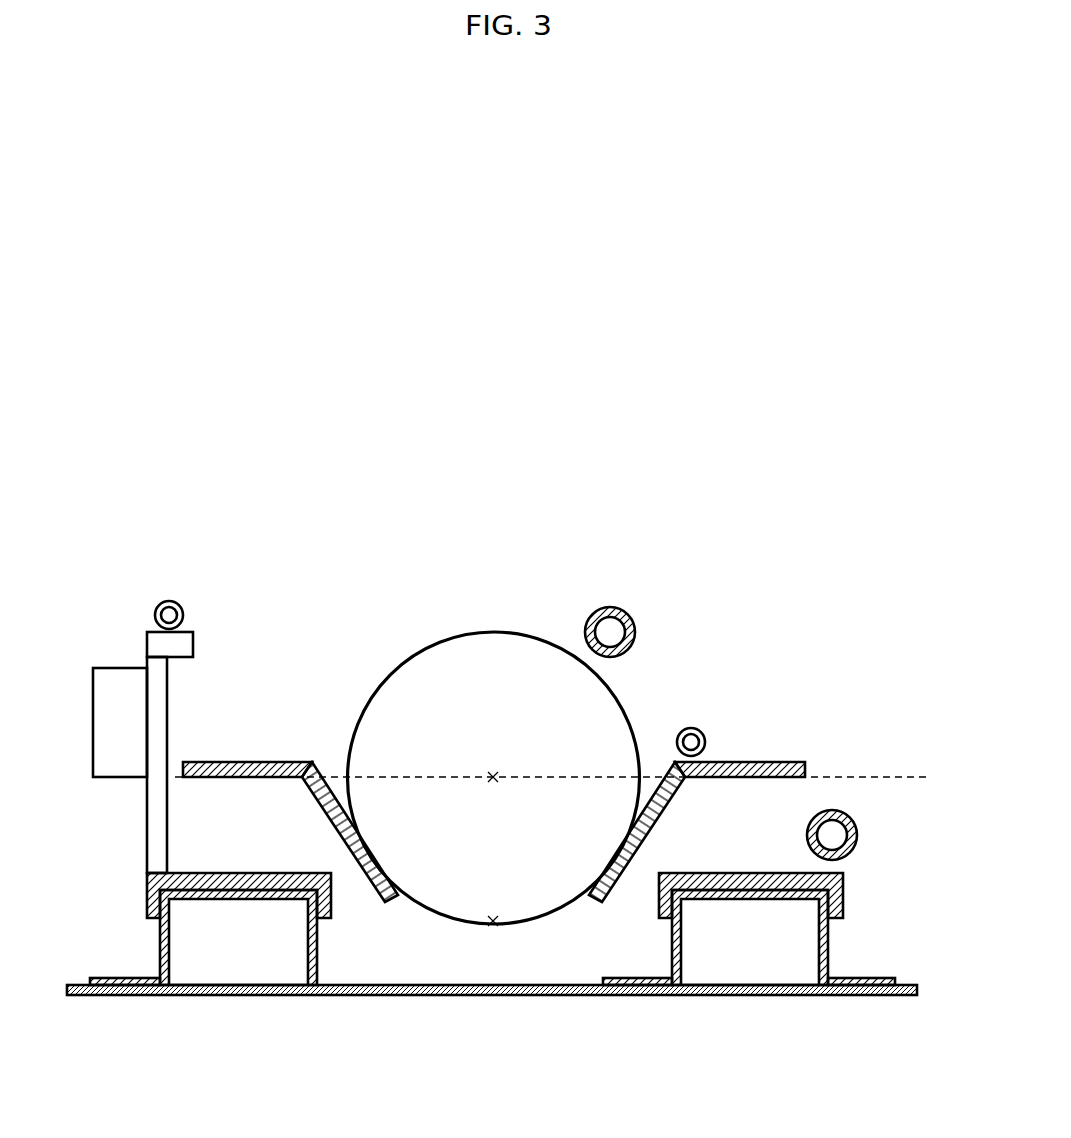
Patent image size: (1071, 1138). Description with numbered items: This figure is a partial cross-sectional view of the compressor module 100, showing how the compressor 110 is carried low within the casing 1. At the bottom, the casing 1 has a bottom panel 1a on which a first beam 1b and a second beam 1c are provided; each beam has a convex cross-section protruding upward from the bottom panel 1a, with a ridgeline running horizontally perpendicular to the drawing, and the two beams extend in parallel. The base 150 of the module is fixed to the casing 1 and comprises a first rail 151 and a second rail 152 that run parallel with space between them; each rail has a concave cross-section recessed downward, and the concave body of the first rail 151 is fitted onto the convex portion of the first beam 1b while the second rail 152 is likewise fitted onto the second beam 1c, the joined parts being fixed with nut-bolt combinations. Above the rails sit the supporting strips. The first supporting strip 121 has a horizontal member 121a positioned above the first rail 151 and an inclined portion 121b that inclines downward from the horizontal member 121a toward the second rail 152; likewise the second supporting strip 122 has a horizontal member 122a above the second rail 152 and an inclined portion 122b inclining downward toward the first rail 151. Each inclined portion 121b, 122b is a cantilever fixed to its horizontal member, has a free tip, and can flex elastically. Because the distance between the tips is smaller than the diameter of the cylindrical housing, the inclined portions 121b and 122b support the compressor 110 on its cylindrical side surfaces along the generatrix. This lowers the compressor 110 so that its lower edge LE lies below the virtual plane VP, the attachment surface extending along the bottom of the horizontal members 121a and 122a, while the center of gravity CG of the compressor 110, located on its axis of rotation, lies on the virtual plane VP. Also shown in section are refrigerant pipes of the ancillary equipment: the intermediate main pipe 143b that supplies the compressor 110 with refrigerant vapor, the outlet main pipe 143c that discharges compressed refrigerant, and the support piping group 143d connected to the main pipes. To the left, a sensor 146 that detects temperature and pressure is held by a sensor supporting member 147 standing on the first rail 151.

The compressor module 100 is at (491, 406).
The compressor 110 is at (493, 630).
The first supporting strip 121 is at (290, 797).
The horizontal member 121a is at (250, 779).
The inclined portion 121b is at (352, 838).
The second supporting strip 122 is at (698, 796).
The horizontal member 122a is at (745, 779).
The inclined portion 122b is at (640, 838).
The intermediate main pipe 143b is at (610, 607).
The outlet main pipe 143c is at (858, 835).
The support piping group 143d is at (169, 600).
The sensor 146 is at (115, 677).
The sensor supporting member 147 is at (150, 833).
The base 150 is at (492, 914).
The first rail 151 is at (147, 896).
The second rail 152 is at (843, 893).
The casing 1 is at (492, 979).
The bottom panel 1a is at (493, 997).
The first beam 1b is at (317, 955).
The second beam 1c is at (672, 957).
The center of gravity CG is at (494, 776).
The virtual plane VP is at (557, 776).
The lower edge LE is at (494, 919).